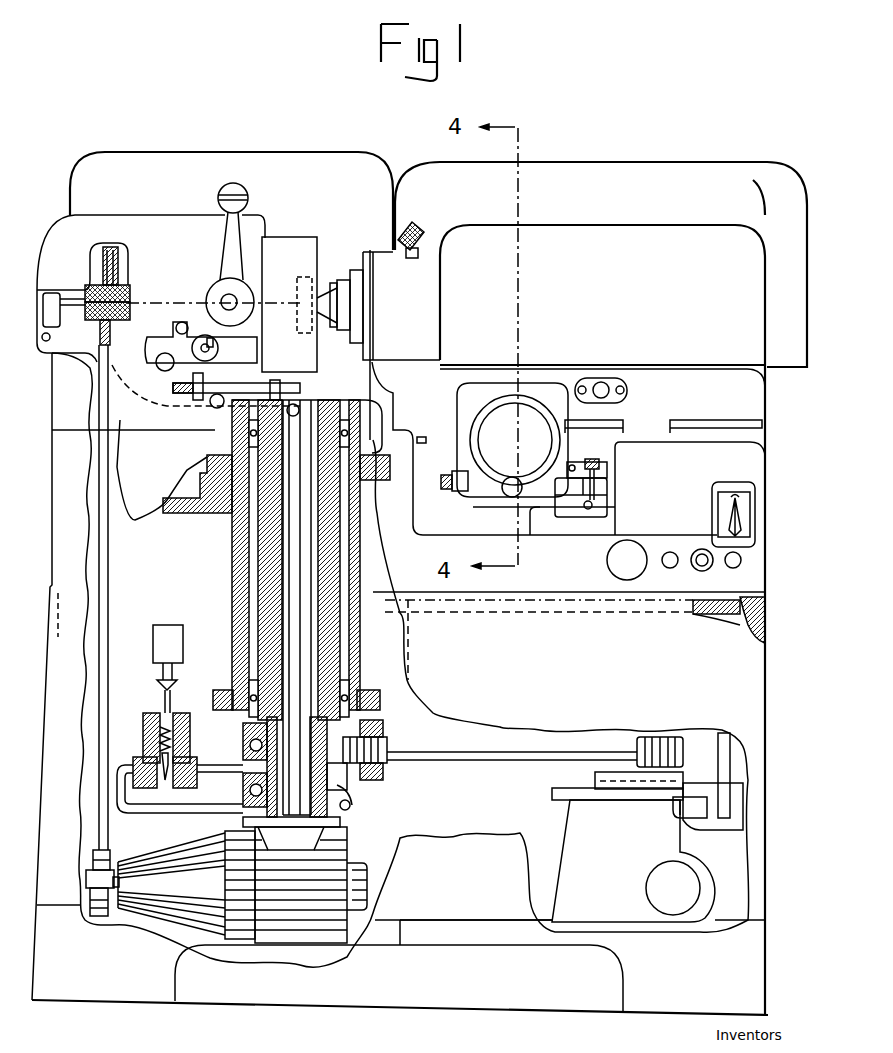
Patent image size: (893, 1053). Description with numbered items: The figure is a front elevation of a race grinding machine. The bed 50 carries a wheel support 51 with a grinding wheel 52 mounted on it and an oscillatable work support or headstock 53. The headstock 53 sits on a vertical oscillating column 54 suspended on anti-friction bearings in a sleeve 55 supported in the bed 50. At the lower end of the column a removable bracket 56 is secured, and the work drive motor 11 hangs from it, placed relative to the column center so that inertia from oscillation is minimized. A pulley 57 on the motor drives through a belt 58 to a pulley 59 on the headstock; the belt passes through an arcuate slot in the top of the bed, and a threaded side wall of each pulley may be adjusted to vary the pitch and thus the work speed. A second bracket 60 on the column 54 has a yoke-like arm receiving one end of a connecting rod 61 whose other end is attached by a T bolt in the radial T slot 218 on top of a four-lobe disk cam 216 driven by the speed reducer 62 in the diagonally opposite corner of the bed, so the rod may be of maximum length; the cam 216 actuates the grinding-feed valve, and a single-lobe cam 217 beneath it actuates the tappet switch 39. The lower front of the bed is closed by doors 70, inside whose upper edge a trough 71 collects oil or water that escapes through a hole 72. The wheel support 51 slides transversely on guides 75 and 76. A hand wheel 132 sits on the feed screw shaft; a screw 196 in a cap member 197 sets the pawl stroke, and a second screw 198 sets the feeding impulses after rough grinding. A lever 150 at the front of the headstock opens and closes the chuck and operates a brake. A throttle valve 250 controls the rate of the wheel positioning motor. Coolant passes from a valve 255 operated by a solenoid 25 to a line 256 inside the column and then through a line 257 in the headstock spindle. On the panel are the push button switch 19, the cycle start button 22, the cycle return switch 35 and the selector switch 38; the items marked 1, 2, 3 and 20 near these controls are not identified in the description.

The switch lever 1 is at (717, 521).
The switch 2 is at (750, 532).
The switch knob 3 is at (742, 519).
The work drive motor 11 is at (195, 836).
The push button switch 19 is at (700, 571).
The indicator lamp 20 is at (733, 569).
The cycle start button 22 is at (612, 565).
The solenoid 25 is at (155, 625).
The cycle return switch 35 is at (668, 568).
The selector switch 38 is at (748, 492).
The tappet switch 39 is at (722, 830).
The bed 50 is at (768, 581).
The wheel support 51 is at (768, 400).
The grinding wheel 52 is at (316, 278).
The work support or headstock 53 is at (143, 215).
The vertical oscillating column 54 is at (262, 547).
The sleeve 55 is at (233, 562).
The removable bracket 56 is at (344, 824).
The pulley 57 is at (112, 865).
The belt 58 is at (110, 564).
The pulley 59 is at (102, 262).
The second bracket 60 is at (385, 733).
The connecting rod 61 is at (487, 761).
The speed reducer 62 is at (570, 835).
The doors 70 is at (491, 779).
The trough 71 is at (710, 612).
The hole 72 is at (768, 615).
The guide 75 is at (421, 437).
The guide 76 is at (642, 423).
The hand wheel 132 is at (496, 482).
The lever 150 is at (246, 193).
The screw 196 is at (607, 510).
The cap member 197 is at (560, 502).
The second screw 198 is at (603, 466).
The disk cam 216 is at (553, 793).
The single lobe cam 217 is at (670, 812).
The radial T slot 218 is at (596, 781).
The throttle valve 250 is at (628, 392).
The valve 255 is at (195, 748).
The line 256 is at (290, 526).
The line 257 is at (48, 348).